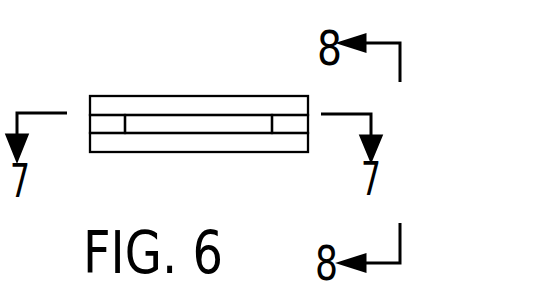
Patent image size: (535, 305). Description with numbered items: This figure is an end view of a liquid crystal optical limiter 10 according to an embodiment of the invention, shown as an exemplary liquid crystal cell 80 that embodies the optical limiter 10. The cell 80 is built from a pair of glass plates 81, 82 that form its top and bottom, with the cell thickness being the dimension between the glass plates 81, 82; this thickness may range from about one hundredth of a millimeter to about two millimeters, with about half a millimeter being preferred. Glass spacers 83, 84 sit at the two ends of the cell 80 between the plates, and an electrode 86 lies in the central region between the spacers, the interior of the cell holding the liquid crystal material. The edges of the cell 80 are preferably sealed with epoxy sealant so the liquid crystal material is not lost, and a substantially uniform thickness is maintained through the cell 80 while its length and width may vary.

The optical limiter 10 is at (121, 42).
The liquid crystal cell 80 is at (277, 68).
The glass plate 81 is at (106, 102).
The glass plate 82 is at (102, 150).
The glass spacer 83 is at (98, 122).
The glass spacer 84 is at (308, 125).
The electrode 86 is at (167, 125).